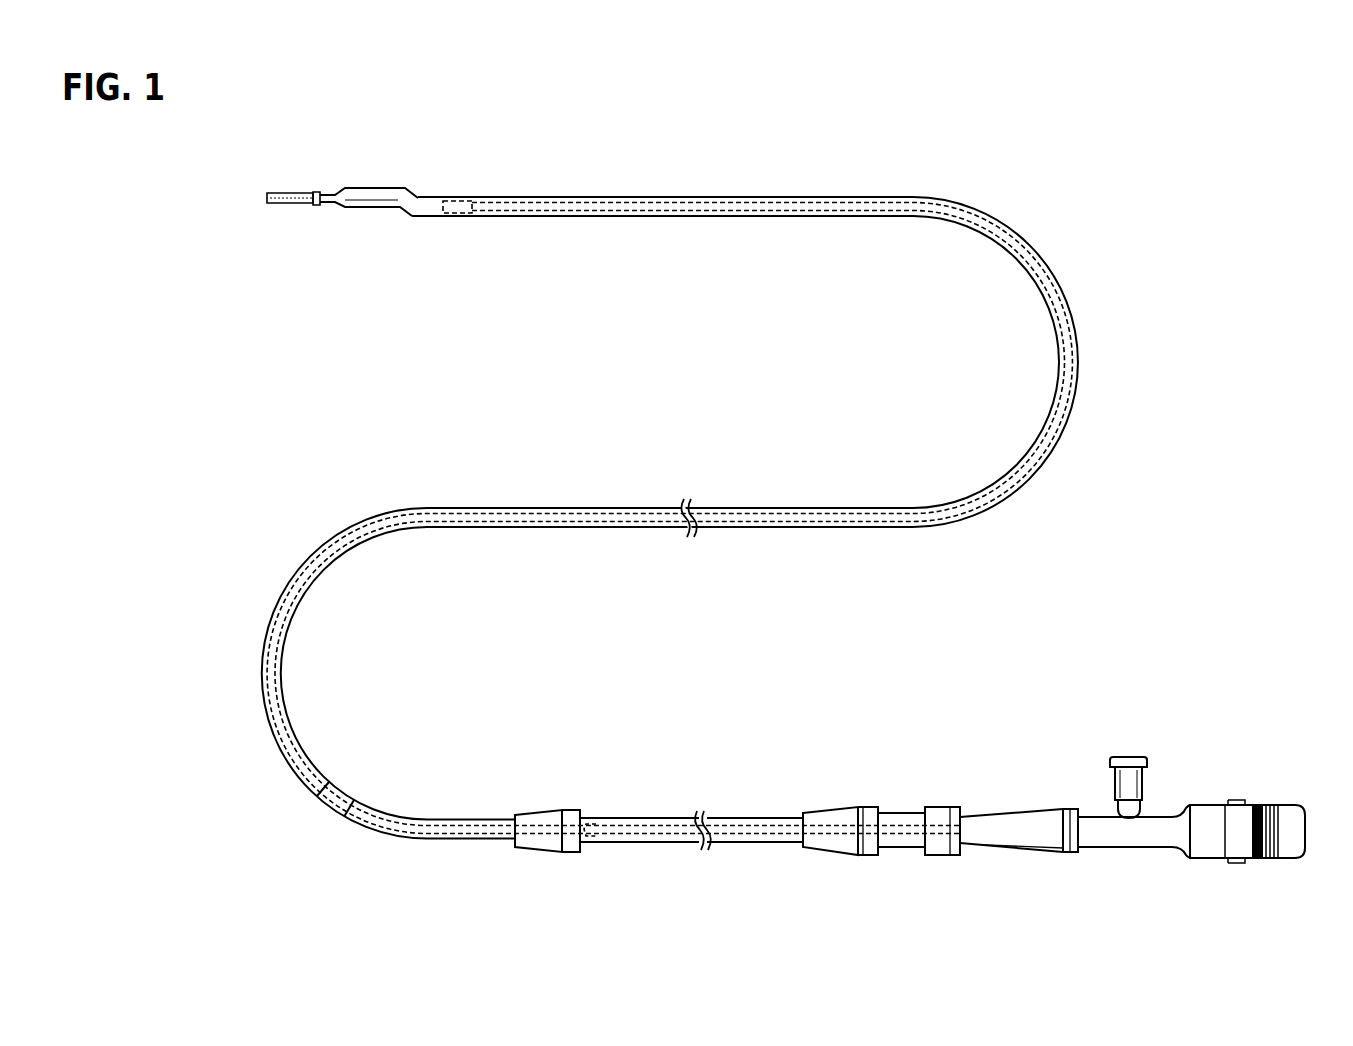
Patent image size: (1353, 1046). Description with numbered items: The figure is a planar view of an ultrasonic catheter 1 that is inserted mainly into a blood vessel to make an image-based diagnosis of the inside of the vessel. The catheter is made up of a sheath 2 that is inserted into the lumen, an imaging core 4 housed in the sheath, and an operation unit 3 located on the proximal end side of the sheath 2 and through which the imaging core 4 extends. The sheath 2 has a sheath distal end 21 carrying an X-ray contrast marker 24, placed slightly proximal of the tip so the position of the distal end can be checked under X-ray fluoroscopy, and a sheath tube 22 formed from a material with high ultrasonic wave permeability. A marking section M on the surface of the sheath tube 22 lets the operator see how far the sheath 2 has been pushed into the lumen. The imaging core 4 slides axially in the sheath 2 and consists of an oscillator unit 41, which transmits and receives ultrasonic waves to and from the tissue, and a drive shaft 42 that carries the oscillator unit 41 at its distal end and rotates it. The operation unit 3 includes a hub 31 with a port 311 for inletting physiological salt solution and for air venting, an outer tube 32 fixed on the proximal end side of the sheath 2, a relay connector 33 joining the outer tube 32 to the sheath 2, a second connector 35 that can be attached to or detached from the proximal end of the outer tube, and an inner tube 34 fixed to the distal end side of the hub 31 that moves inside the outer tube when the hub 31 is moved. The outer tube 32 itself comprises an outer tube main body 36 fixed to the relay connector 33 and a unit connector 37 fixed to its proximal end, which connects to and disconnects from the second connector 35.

The ultrasonic catheter 1 is at (236, 184).
The sheath 2 is at (683, 226).
The sheath distal end 21 is at (368, 196).
The sheath tube 22 is at (648, 219).
The X-ray contrast marker 24 is at (319, 206).
The imaging core 4 is at (538, 270).
The oscillator unit 41 is at (451, 215).
The drive shaft 42 is at (522, 212).
The marking section M is at (351, 803).
The operation unit 3 is at (1022, 808).
The hub 31 is at (1173, 815).
The port 311 is at (1117, 780).
The outer tube 32 is at (878, 735).
The relay connector 33 is at (569, 810).
The inner tube 34 is at (728, 820).
The second connector 35 is at (942, 807).
The outer tube main body 36 is at (782, 813).
The unit connector 37 is at (864, 807).